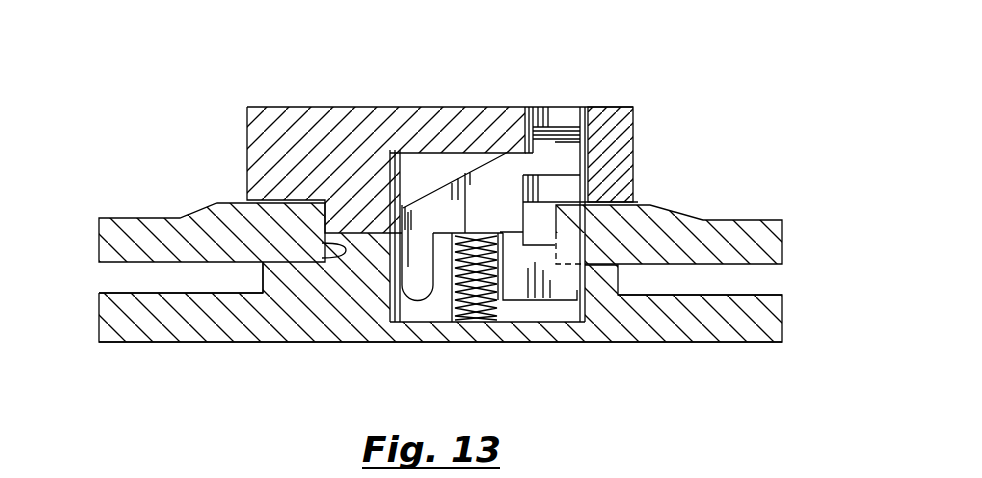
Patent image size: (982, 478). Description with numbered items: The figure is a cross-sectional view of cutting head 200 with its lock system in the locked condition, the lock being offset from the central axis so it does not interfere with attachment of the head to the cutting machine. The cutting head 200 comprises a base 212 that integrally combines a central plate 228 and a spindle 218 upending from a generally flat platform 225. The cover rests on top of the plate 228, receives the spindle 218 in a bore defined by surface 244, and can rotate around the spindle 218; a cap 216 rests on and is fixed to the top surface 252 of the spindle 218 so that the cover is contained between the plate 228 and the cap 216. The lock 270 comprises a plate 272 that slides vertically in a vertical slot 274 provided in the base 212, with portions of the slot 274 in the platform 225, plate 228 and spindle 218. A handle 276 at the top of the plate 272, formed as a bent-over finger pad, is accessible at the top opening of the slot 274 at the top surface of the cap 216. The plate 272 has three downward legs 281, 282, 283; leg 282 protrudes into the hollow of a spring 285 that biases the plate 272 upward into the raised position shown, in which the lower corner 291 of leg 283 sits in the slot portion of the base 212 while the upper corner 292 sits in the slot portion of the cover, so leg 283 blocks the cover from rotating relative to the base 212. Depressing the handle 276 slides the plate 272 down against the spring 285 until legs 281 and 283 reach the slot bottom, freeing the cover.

The cutting head 200 is at (220, 100).
The base 212 is at (283, 360).
The cap 216 is at (296, 138).
The spindle 218 is at (363, 248).
The platform 225 is at (130, 300).
The central plate 228 is at (287, 278).
The bore surface 244 is at (322, 258).
The top surface of spindle 252 is at (355, 230).
The lock 270 is at (505, 178).
The plate 272 is at (458, 177).
The vertical slot 274 is at (430, 172).
The handle 276 is at (558, 127).
The leg 281 is at (414, 287).
The leg 282 is at (462, 240).
The leg 283 is at (538, 295).
The spring 285 is at (475, 243).
The lower corner 291 is at (572, 290).
The upper corner 292 is at (572, 250).